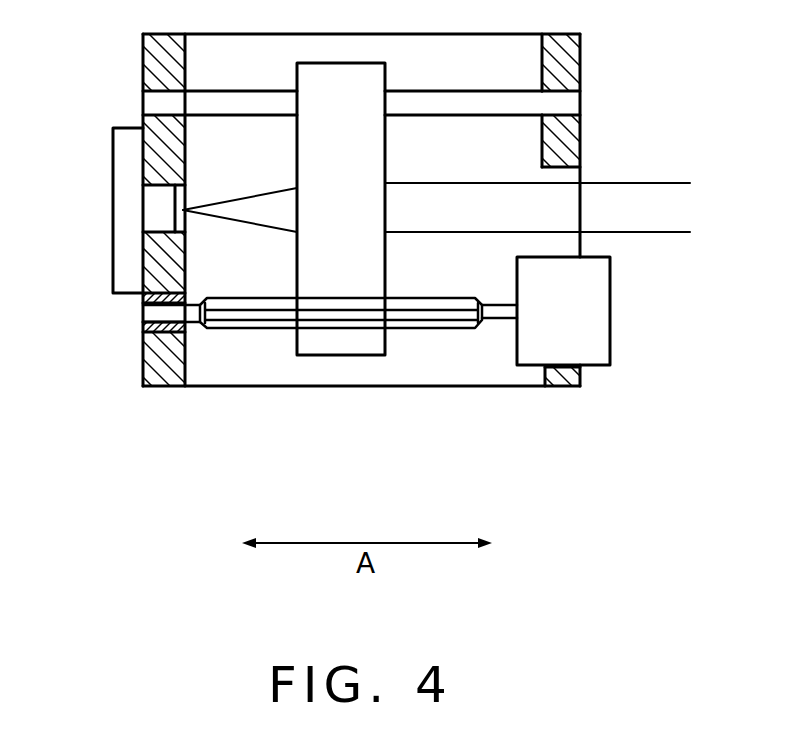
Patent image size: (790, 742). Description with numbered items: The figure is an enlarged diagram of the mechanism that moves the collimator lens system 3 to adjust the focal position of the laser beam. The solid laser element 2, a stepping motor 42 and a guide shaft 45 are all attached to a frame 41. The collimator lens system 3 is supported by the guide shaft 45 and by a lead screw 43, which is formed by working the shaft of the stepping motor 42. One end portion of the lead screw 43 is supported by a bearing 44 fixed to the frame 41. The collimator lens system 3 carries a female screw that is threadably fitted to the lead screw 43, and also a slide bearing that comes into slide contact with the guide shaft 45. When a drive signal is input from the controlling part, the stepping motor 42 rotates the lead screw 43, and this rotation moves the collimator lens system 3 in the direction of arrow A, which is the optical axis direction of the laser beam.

The solid laser element 2 is at (118, 207).
The collimator lens system 3 is at (347, 343).
The frame 41 is at (163, 389).
The stepping motor 42 is at (597, 315).
The lead screw 43 is at (452, 330).
The bearing 44 is at (142, 328).
The guide shaft 45 is at (573, 102).